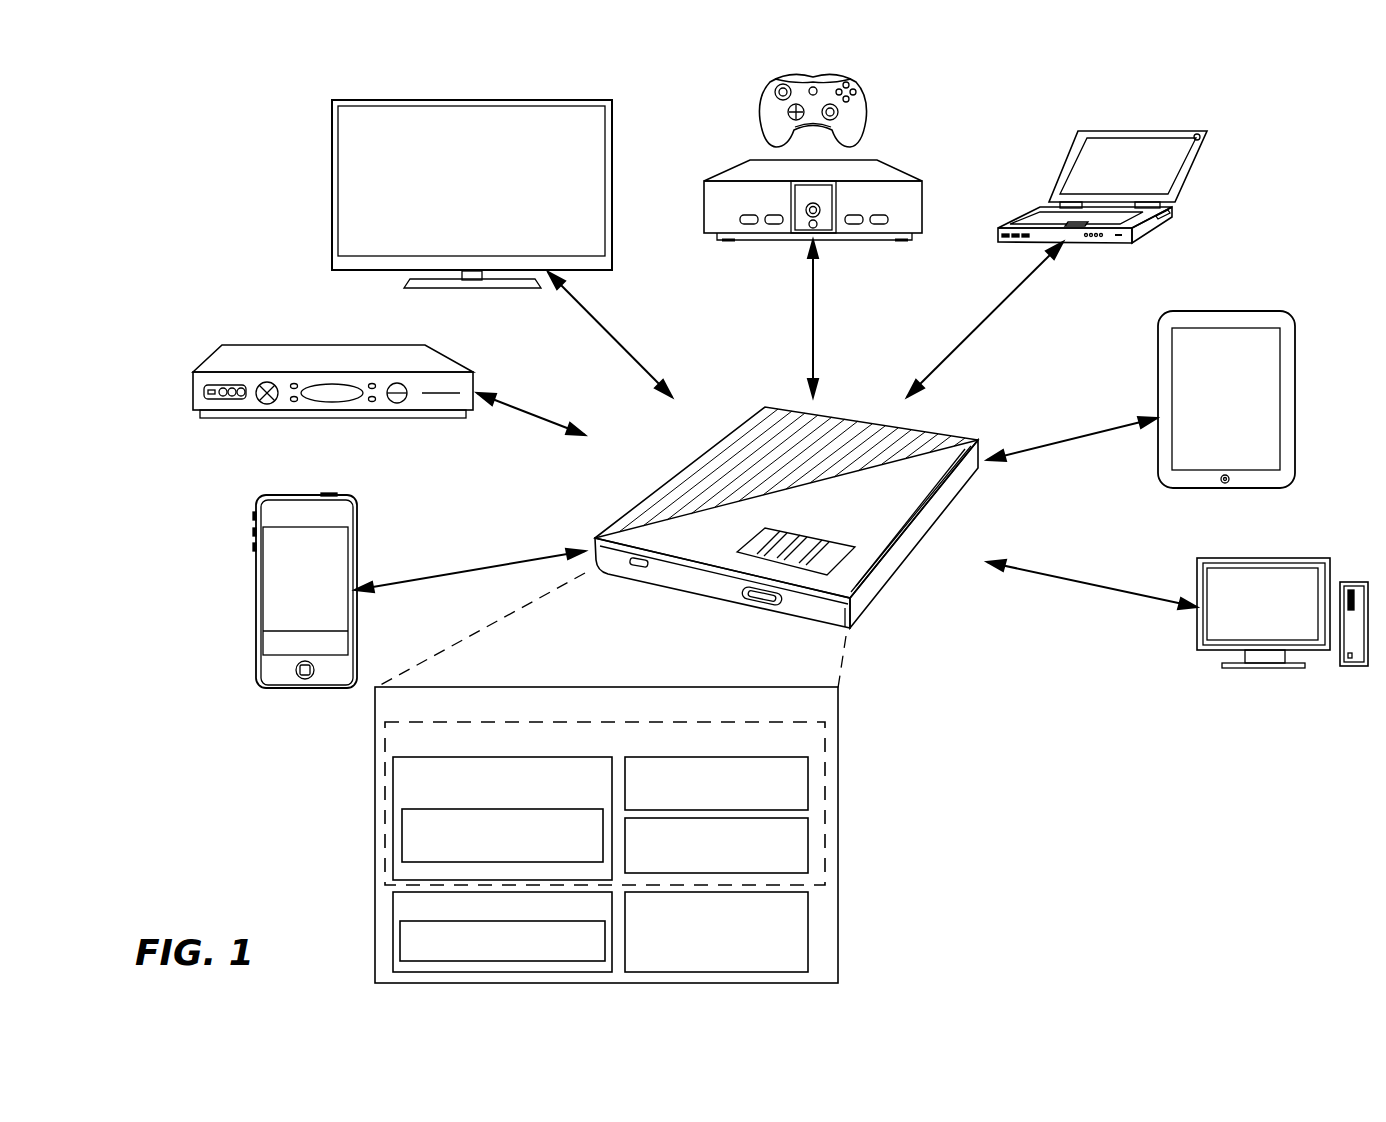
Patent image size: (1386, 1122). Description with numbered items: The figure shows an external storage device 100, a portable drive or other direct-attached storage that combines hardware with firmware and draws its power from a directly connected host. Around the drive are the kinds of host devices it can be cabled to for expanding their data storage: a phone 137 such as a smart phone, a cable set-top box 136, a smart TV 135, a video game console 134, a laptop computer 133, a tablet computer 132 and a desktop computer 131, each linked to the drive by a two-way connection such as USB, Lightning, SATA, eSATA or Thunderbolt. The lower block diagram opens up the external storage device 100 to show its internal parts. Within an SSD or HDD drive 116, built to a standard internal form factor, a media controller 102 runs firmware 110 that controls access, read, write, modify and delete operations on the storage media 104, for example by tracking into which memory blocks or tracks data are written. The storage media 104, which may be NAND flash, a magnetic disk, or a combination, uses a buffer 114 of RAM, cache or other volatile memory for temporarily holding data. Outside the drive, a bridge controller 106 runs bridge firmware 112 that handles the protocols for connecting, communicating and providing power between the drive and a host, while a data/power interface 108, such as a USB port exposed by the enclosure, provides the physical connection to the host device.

The external storage device 100 is at (362, 869).
The media controller 102 is at (401, 757).
The storage media 104 is at (716, 783).
The bridge controller 106 is at (400, 928).
The data/power interface 108 is at (808, 932).
The firmware 110 is at (502, 835).
The bridge firmware 112 is at (502, 941).
The buffer 114 is at (716, 845).
The SSD or HDD drive 116 is at (605, 803).
The desktop computer 131 is at (1302, 558).
The tablet computer 132 is at (1226, 311).
The laptop computer 133 is at (1143, 131).
The video game console 134 is at (900, 173).
The smart TV 135 is at (473, 100).
The cable set-top box 136 is at (333, 345).
The phone 137 is at (305, 495).